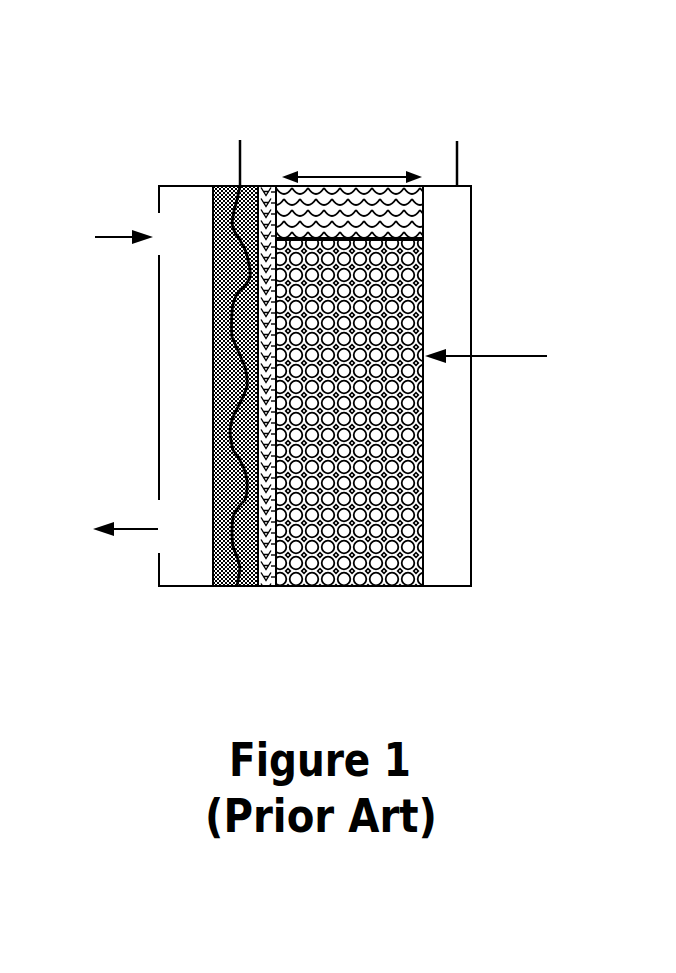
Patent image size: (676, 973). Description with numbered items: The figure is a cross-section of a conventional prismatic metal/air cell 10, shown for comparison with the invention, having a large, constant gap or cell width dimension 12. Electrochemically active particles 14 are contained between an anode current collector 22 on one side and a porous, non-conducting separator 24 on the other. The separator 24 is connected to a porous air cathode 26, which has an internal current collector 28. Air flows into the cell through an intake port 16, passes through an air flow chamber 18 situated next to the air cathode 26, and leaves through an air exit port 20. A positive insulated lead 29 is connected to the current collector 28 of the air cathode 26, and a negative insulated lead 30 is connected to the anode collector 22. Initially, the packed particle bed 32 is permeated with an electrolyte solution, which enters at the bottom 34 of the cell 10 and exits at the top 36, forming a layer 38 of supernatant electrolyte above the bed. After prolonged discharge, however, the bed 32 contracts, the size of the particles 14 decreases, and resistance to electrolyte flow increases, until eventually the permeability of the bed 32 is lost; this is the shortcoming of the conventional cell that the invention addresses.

The prismatic metal/air cell 10 is at (66, 95).
The gap dimension 12 is at (352, 167).
The electrochemically active particles 14 is at (386, 452).
The intake port 16 is at (124, 226).
The air flow chamber 18 is at (202, 403).
The air exit port 20 is at (125, 520).
The anode current collector 22 is at (452, 308).
The porous, non-conducting separator 24 is at (267, 580).
The porous air cathode 26 is at (218, 573).
The internal current collector 28 is at (245, 497).
The positive insulated lead 29 is at (240, 152).
The negative insulated lead 30 is at (458, 160).
The packed particle bed 32 is at (505, 362).
The bottom of the cell 34 is at (407, 609).
The top of the cell 36 is at (385, 172).
The layer of supernatant electrolyte 38 is at (400, 220).